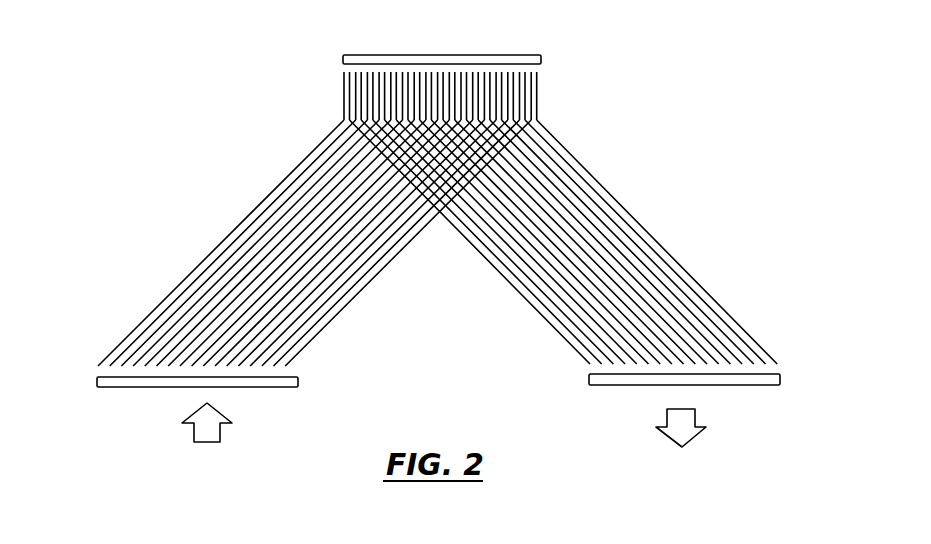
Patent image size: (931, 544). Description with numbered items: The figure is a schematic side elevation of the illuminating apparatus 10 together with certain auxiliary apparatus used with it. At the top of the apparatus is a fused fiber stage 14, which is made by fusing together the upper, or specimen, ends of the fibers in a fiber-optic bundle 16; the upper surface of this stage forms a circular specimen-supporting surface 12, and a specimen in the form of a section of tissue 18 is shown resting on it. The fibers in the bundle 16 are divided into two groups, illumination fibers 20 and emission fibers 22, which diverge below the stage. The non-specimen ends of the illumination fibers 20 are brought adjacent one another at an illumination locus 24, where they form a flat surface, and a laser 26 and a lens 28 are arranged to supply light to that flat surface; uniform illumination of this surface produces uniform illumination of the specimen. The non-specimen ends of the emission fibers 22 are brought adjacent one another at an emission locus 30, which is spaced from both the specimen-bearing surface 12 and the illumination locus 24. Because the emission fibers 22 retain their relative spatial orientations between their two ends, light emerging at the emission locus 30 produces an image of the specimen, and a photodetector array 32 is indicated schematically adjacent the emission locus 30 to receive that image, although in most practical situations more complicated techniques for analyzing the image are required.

The illuminating apparatus 10 is at (633, 191).
The specimen-supporting surface 12 is at (437, 214).
The fused fiber stage 14 is at (522, 82).
The fiber-optic bundle 16 is at (438, 247).
The section of tissue 18 is at (454, 55).
The illumination fibers 20 is at (235, 258).
The emission fibers 22 is at (653, 256).
The illumination locus 24 is at (133, 363).
The laser 26 is at (212, 432).
The lens 28 is at (270, 387).
The emission locus 30 is at (750, 362).
The photodetector array 32 is at (626, 386).